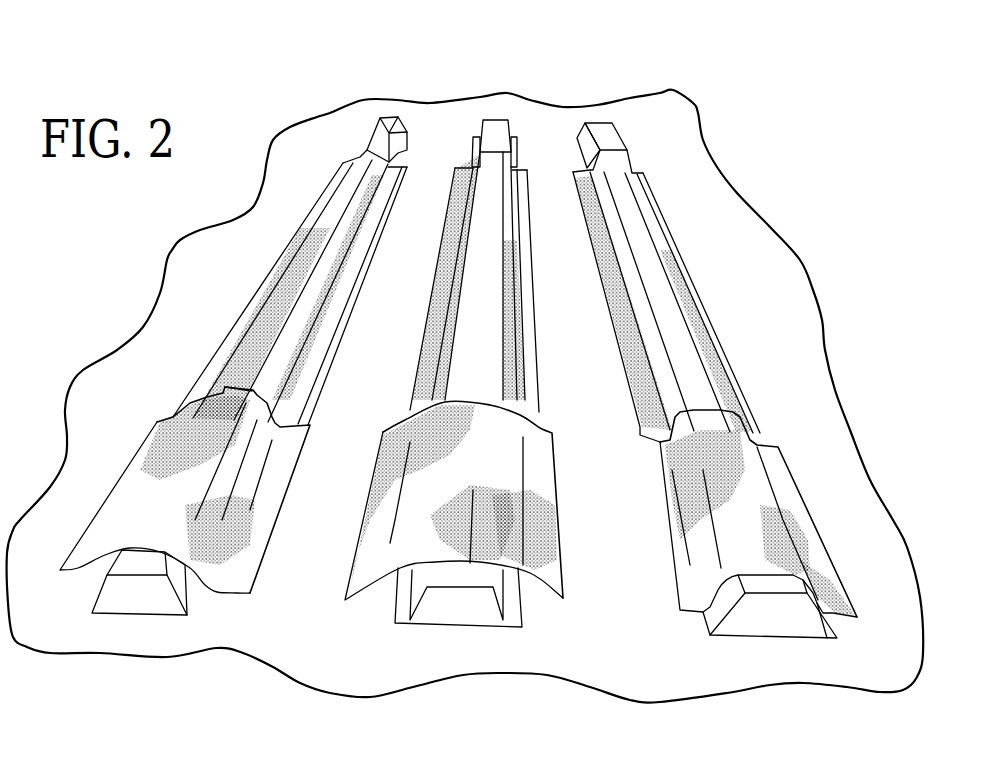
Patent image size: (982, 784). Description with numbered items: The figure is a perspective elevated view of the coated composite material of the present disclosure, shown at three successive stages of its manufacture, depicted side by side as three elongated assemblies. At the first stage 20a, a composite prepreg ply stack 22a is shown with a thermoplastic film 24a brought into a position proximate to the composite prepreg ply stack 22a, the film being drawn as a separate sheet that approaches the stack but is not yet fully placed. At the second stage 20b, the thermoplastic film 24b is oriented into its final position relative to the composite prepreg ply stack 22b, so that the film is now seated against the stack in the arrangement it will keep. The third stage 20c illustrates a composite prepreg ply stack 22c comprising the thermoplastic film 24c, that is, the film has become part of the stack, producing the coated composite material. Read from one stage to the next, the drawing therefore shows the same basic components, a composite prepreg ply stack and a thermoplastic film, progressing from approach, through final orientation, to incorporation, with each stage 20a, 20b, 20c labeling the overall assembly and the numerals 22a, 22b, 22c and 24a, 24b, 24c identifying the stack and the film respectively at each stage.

The stage 20a is at (507, 97).
The stage 20b is at (401, 104).
The stage 20c is at (605, 105).
The composite prepreg ply stack 22a is at (480, 617).
The composite prepreg ply stack 22b is at (137, 598).
The composite prepreg ply stack 22c is at (770, 618).
The thermoplastic film 24a is at (437, 465).
The thermoplastic film 24b is at (165, 465).
The thermoplastic film 24c is at (738, 482).